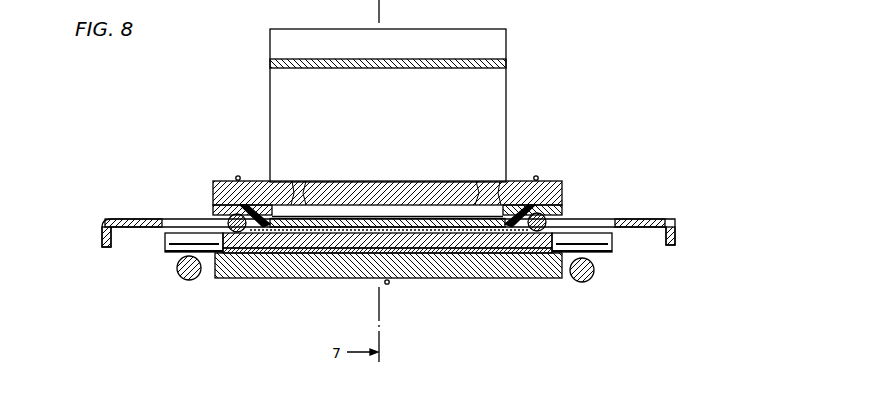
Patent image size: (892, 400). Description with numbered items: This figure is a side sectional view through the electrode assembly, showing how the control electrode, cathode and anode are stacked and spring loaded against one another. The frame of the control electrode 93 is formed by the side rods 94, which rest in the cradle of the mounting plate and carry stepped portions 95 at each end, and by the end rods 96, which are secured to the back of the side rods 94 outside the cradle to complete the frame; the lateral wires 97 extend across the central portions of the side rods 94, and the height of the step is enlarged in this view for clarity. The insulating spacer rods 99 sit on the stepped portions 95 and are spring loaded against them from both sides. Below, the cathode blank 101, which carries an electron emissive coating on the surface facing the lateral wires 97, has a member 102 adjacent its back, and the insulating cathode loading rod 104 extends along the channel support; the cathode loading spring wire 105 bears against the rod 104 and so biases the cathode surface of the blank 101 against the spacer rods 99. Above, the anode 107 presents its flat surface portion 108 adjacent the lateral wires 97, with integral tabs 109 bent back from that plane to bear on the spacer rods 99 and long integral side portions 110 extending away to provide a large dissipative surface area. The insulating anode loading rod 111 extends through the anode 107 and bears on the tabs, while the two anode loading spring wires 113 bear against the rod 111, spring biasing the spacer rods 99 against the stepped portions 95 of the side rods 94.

The control electrode 93 is at (297, 229).
The side rods 94 is at (605, 238).
The stepped portions 95 is at (228, 222).
The end rods 96 is at (185, 278).
The lateral wires 97 is at (333, 220).
The insulating spacer rods 99 is at (562, 190).
The cathode blank 101 is at (440, 240).
The member 102 is at (422, 250).
The insulating cathode loading rod 104 is at (485, 268).
The cathode loading spring wire 105 is at (388, 285).
The anode 107 is at (523, 80).
The flat surface portion 108 is at (445, 220).
The integral tabs 109 is at (215, 210).
The integral side portions 110 is at (282, 95).
The insulating anode loading rod 111 is at (259, 181).
The anode loading spring wires 113 is at (237, 176).